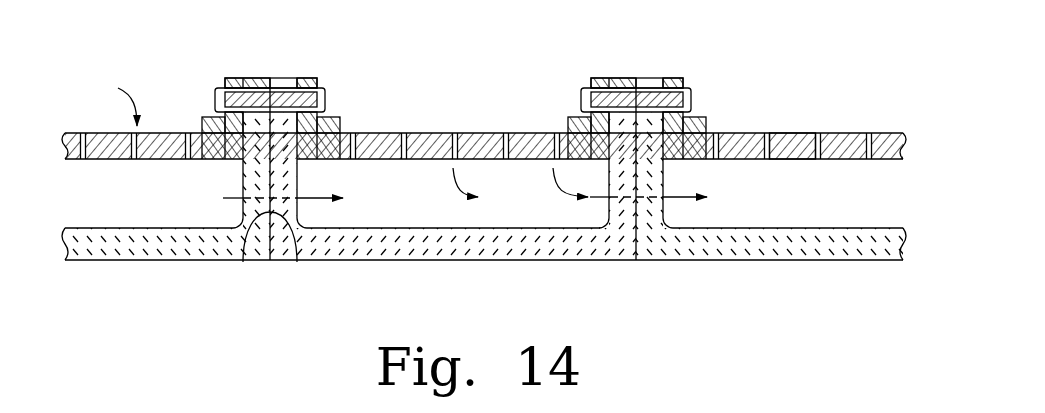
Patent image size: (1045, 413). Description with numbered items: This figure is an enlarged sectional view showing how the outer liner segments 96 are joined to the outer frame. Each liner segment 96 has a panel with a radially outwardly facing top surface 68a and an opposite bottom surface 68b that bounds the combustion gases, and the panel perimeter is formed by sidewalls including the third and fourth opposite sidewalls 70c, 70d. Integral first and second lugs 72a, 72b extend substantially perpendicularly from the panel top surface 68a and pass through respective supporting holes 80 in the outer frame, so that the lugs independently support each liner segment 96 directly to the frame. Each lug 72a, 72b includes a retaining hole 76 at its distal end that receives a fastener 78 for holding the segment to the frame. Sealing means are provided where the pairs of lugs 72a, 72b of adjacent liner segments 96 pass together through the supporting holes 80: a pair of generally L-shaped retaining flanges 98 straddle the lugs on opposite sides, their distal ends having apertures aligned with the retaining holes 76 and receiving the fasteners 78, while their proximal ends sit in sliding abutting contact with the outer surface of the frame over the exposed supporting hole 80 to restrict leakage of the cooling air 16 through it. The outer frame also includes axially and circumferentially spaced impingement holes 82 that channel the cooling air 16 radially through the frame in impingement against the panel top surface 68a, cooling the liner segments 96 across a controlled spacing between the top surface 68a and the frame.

The cooling air 16 is at (453, 122).
The retaining flanges 98 is at (228, 78).
The second lug 72b is at (258, 78).
The first lug 72a is at (290, 78).
The retaining hole 76 is at (645, 78).
The fastener 78 is at (687, 86).
The impingement holes 82 is at (815, 133).
The supporting holes 80 is at (242, 166).
The top surface 68a is at (402, 228).
The bottom surface 68b is at (430, 261).
The third sidewall 70c is at (243, 262).
The fourth sidewall 70d is at (297, 262).
The liner segments 96 is at (588, 261).